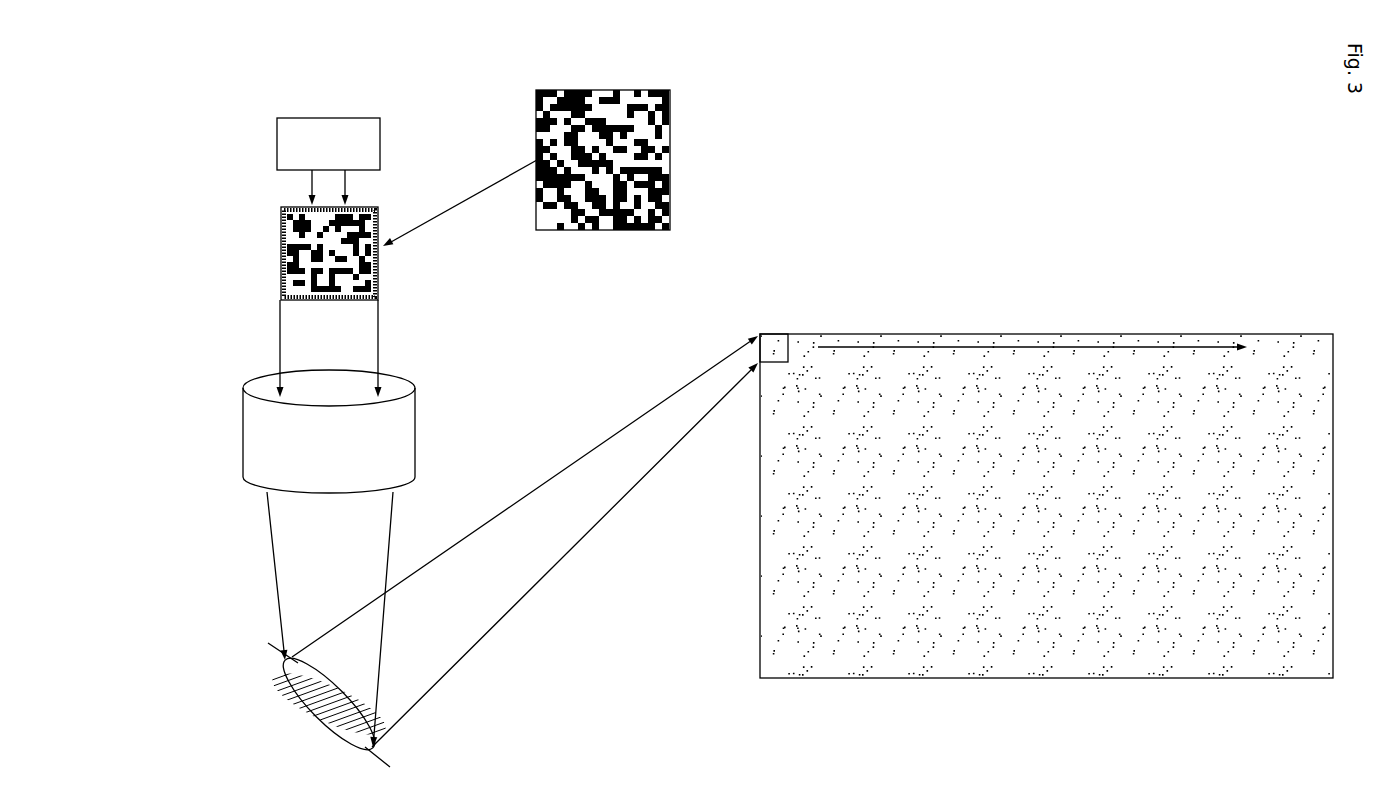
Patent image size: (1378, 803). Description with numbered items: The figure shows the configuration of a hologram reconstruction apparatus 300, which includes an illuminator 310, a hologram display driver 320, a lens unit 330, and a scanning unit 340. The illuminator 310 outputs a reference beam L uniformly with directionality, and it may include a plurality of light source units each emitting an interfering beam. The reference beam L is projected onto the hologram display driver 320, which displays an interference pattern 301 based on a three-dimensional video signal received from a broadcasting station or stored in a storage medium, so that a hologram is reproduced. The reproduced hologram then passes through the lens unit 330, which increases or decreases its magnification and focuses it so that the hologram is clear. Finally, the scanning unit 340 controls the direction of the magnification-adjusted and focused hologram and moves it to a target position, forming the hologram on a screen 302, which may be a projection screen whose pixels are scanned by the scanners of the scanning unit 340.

The hologram reconstruction apparatus 300 is at (348, 113).
The illuminator 310 is at (277, 138).
The reference beam L is at (345, 175).
The hologram display driver 320 is at (281, 250).
The random pattern 301 is at (672, 157).
The lens unit 330 is at (243, 429).
The scanning unit 340 is at (316, 716).
The target object / substrate 302 is at (937, 334).